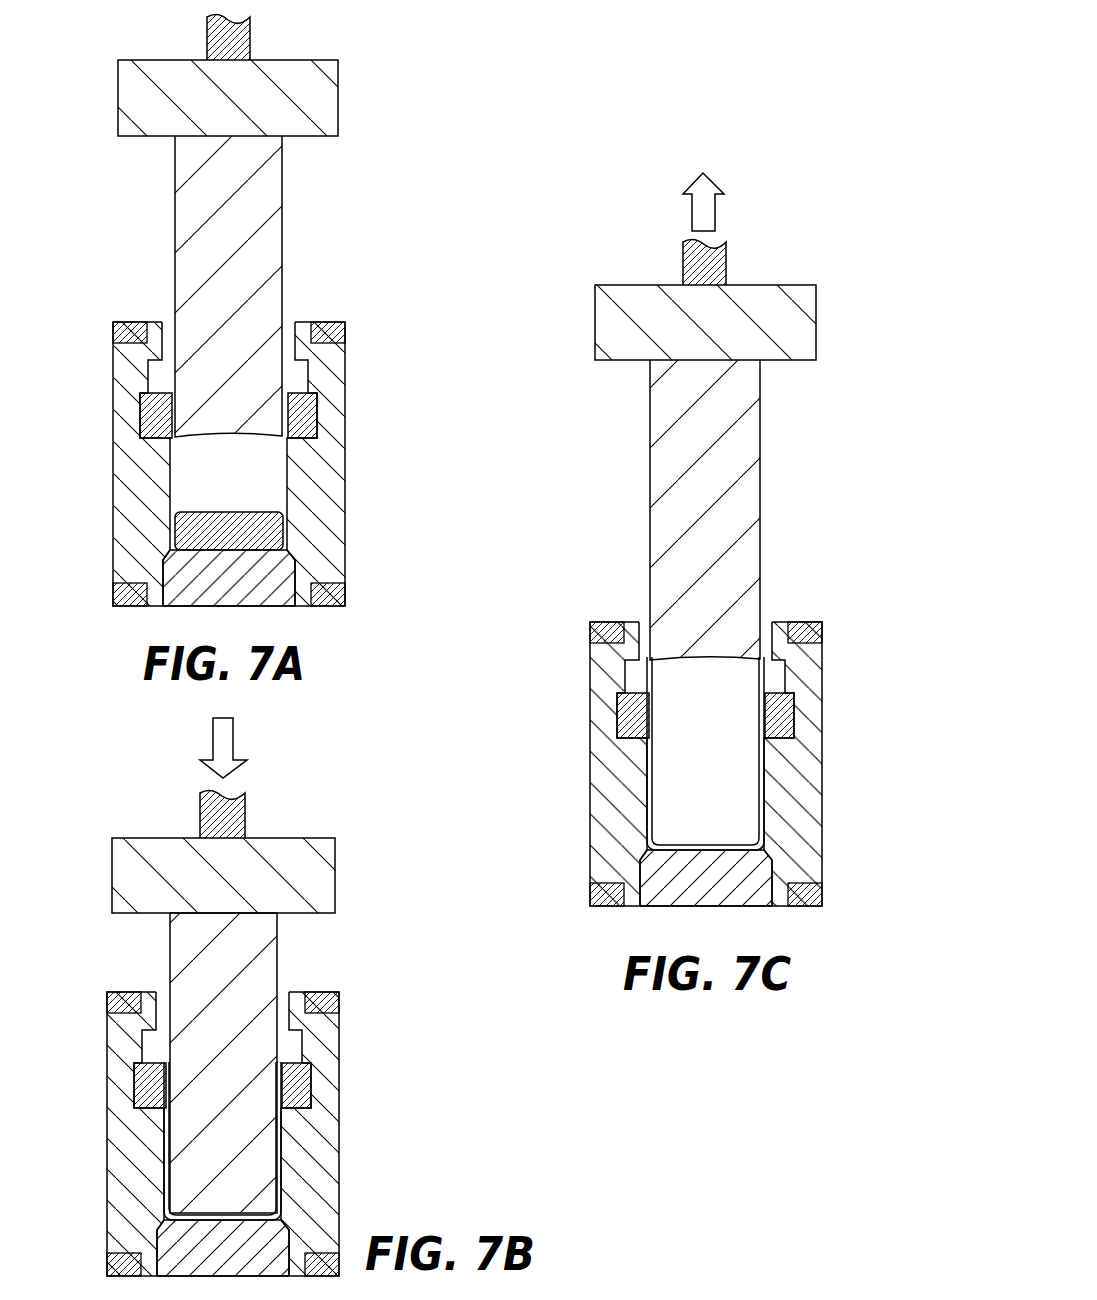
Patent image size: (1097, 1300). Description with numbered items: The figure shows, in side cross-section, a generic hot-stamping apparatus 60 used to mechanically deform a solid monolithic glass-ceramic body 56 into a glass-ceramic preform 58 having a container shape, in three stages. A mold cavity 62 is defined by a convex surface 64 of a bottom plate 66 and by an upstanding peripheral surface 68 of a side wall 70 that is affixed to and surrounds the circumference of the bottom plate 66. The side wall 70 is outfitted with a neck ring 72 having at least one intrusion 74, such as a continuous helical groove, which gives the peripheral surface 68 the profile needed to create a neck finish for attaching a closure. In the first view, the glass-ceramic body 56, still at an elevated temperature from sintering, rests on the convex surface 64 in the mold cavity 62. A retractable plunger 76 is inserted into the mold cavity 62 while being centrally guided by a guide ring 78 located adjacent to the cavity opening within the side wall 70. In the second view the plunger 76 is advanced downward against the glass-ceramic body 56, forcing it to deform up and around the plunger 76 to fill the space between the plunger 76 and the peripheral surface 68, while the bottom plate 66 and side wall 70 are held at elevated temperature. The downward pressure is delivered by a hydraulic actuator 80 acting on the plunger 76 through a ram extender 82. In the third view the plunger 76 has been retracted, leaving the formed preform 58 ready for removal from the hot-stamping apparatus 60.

In FIG. 7A, the solid monolithic glass-ceramic body 56 is at (248, 527).
In FIG. 7B, the glass-ceramic preform 58 is at (290, 1138).
In FIG. 7C, the glass-ceramic preform 58 is at (656, 785).
In FIG. 7A, the hot-stamping apparatus 60 is at (220, 325).
In FIG. 7B, the hot-stamping apparatus 60 is at (218, 997).
In FIG. 7C, the hot-stamping apparatus 60 is at (698, 556).
In FIG. 7A, the mold cavity 62 is at (283, 474).
In FIG. 7A, the convex surface 64 is at (262, 548).
In FIG. 7A, the bottom plate 66 is at (246, 586).
In FIG. 7B, the bottom plate 66 is at (268, 1262).
In FIG. 7C, the bottom plate 66 is at (722, 891).
In FIG. 7A, the upstanding peripheral surface 68 is at (176, 466).
In FIG. 7A, the side wall 70 is at (135, 524).
In FIG. 7B, the side wall 70 is at (123, 1163).
In FIG. 7C, the side wall 70 is at (603, 791).
In FIG. 7A, the neck ring 72 is at (293, 402).
In FIG. 7B, the neck ring 72 is at (302, 1083).
In FIG. 7C, the neck ring 72 is at (779, 712).
In FIG. 7A, the intrusion 74 is at (289, 398).
In FIG. 7A, the retractable plunger 76 is at (270, 281).
In FIG. 7B, the retractable plunger 76 is at (268, 972).
In FIG. 7C, the retractable plunger 76 is at (750, 487).
In FIG. 7A, the guide ring 78 is at (300, 372).
In FIG. 7B, the guide ring 78 is at (292, 1040).
In FIG. 7C, the guide ring 78 is at (771, 670).
In FIG. 7A, the hydraulic actuator 80 is at (244, 39).
In FIG. 7B, the hydraulic actuator 80 is at (233, 809).
In FIG. 7C, the hydraulic actuator 80 is at (715, 258).
In FIG. 7A, the ram extender 82 is at (332, 110).
In FIG. 7B, the ram extender 82 is at (318, 881).
In FIG. 7C, the ram extender 82 is at (803, 316).